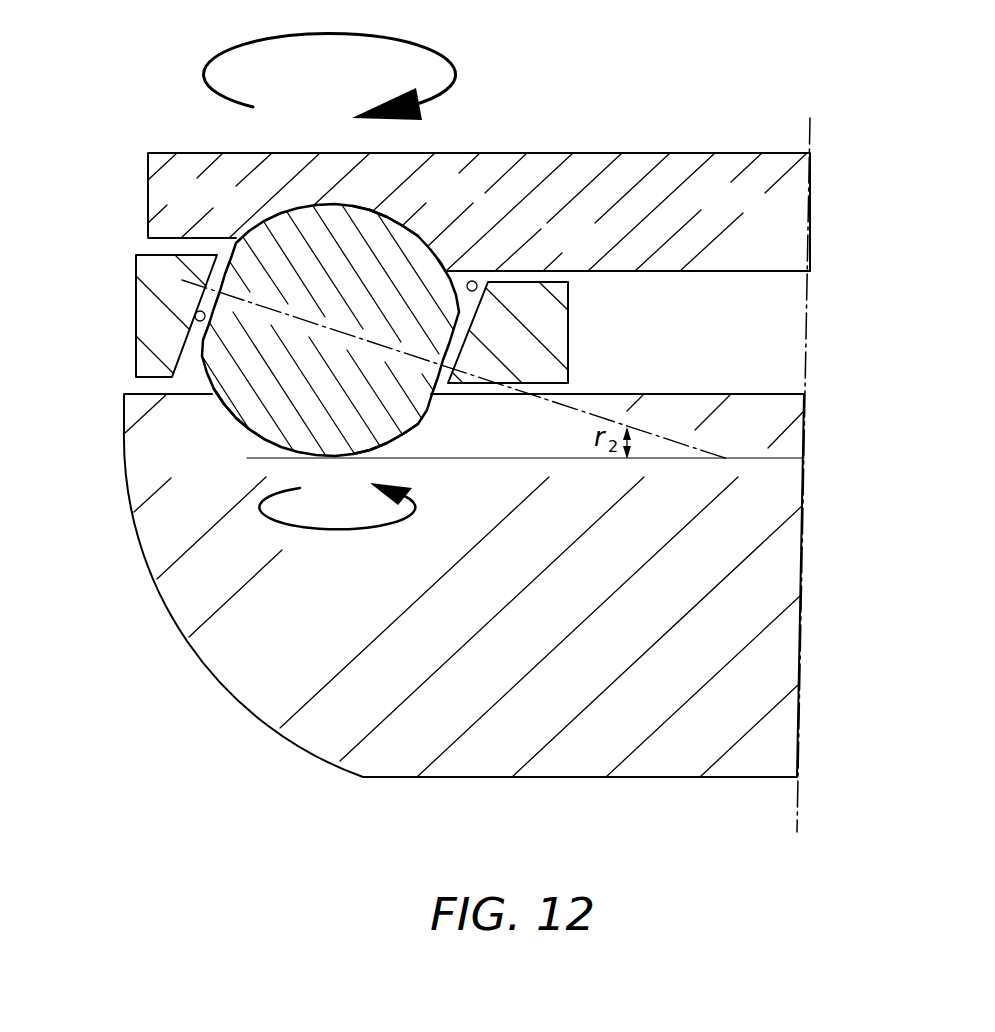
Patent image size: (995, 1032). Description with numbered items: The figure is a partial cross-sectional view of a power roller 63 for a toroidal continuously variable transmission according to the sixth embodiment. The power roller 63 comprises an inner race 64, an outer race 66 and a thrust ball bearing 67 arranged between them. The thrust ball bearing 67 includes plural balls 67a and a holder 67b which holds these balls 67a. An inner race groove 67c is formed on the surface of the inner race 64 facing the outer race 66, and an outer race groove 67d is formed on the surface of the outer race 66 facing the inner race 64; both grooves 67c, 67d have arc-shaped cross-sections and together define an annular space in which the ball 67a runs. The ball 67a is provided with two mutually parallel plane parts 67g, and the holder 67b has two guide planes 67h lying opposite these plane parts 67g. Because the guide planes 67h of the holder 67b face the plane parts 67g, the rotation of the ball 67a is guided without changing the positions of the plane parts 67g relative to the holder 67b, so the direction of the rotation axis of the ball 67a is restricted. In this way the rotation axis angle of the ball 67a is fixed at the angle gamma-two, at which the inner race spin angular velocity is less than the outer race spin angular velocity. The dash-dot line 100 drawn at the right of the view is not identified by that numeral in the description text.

The power roller 63 is at (702, 14).
The inner race 64 is at (320, 728).
The outer race 66 is at (657, 182).
The thrust ball bearing 67 is at (118, 292).
The ball 67a is at (252, 412).
The holder 67b is at (540, 278).
The inner race groove 67c is at (390, 436).
The outer race groove 67d is at (372, 223).
The plane parts 67g is at (235, 247).
The guide planes 67h is at (470, 282).
The center axis 100 is at (812, 122).